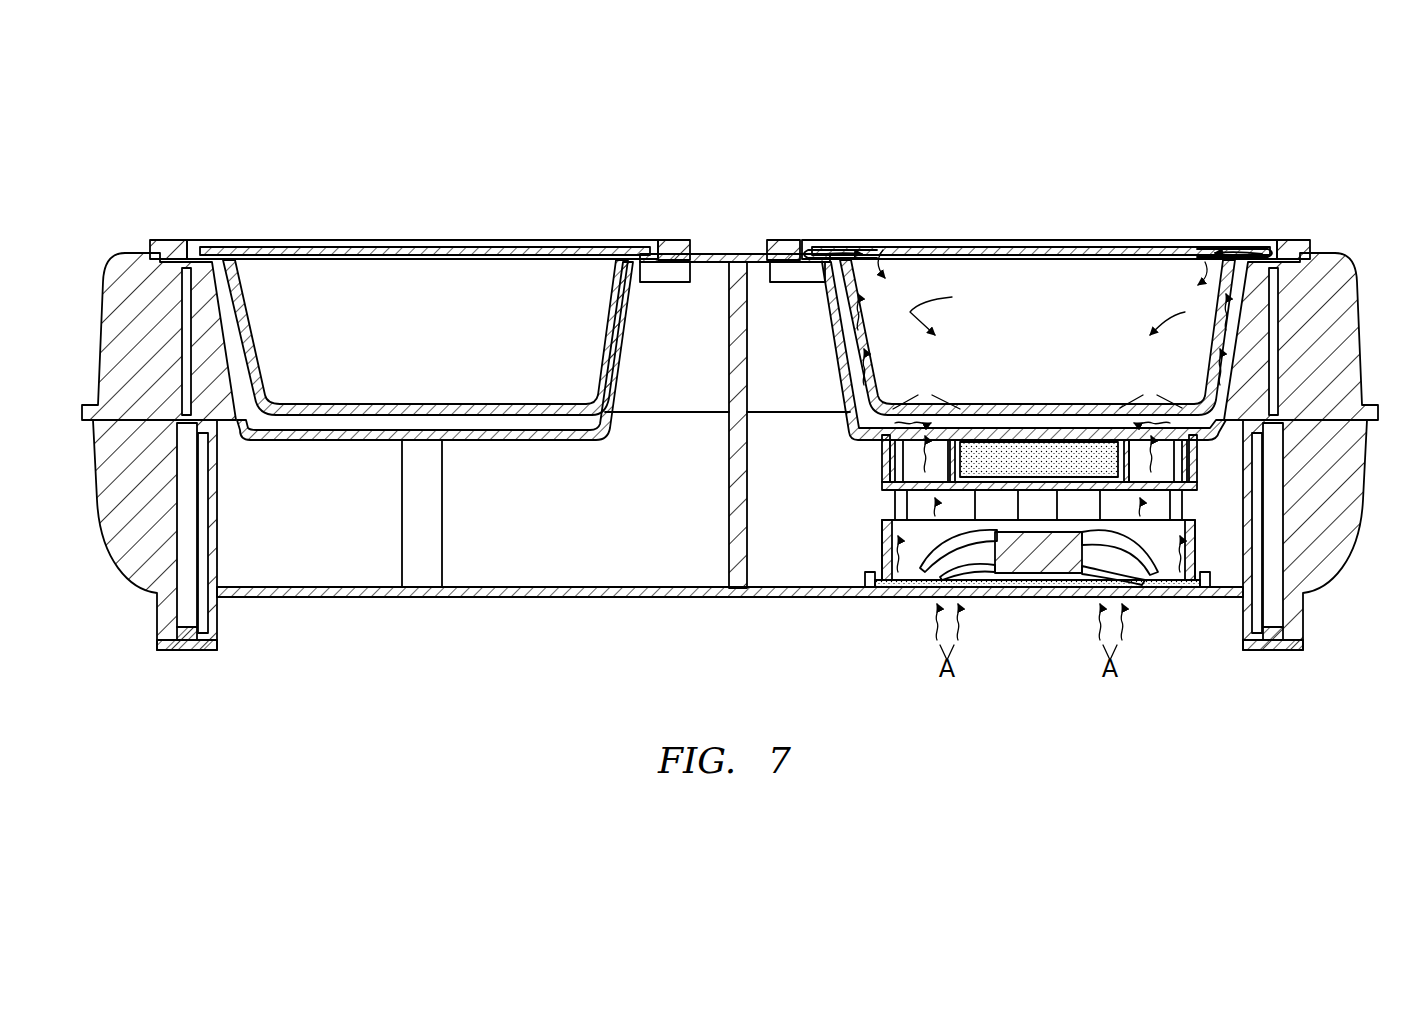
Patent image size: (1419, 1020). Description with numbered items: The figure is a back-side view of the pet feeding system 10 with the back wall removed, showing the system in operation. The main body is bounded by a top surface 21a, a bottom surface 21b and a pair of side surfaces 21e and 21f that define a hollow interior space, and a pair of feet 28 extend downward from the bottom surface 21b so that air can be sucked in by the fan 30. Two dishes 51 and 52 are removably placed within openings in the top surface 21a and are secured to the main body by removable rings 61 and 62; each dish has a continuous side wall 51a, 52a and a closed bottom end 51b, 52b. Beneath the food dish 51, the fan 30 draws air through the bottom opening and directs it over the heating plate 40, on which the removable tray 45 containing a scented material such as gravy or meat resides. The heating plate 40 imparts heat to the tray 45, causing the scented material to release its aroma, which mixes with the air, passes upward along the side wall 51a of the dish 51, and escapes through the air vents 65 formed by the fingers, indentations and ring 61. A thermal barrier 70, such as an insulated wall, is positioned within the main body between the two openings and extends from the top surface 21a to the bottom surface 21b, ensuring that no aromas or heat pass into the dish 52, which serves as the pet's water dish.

The pet feeding system 10 is at (155, 178).
The top surface 21a is at (741, 255).
The bottom surface 21b is at (692, 597).
The side surface 21e is at (97, 358).
The side surface 21f is at (1365, 305).
The feet 28 is at (185, 650).
The fan 30 is at (1045, 556).
The heating plate 40 is at (978, 491).
The removable tray 45 is at (1060, 450).
The dish 51 is at (1028, 236).
The side wall 51a is at (874, 322).
The closed bottom end 51b is at (1038, 404).
The dish 52 is at (360, 237).
The side wall 52a is at (258, 324).
The closed bottom end 52b is at (418, 404).
The removable ring 61 is at (1295, 240).
The removable ring 62 is at (672, 240).
The air vents 65 is at (888, 258).
The thermal barrier 70 is at (728, 480).